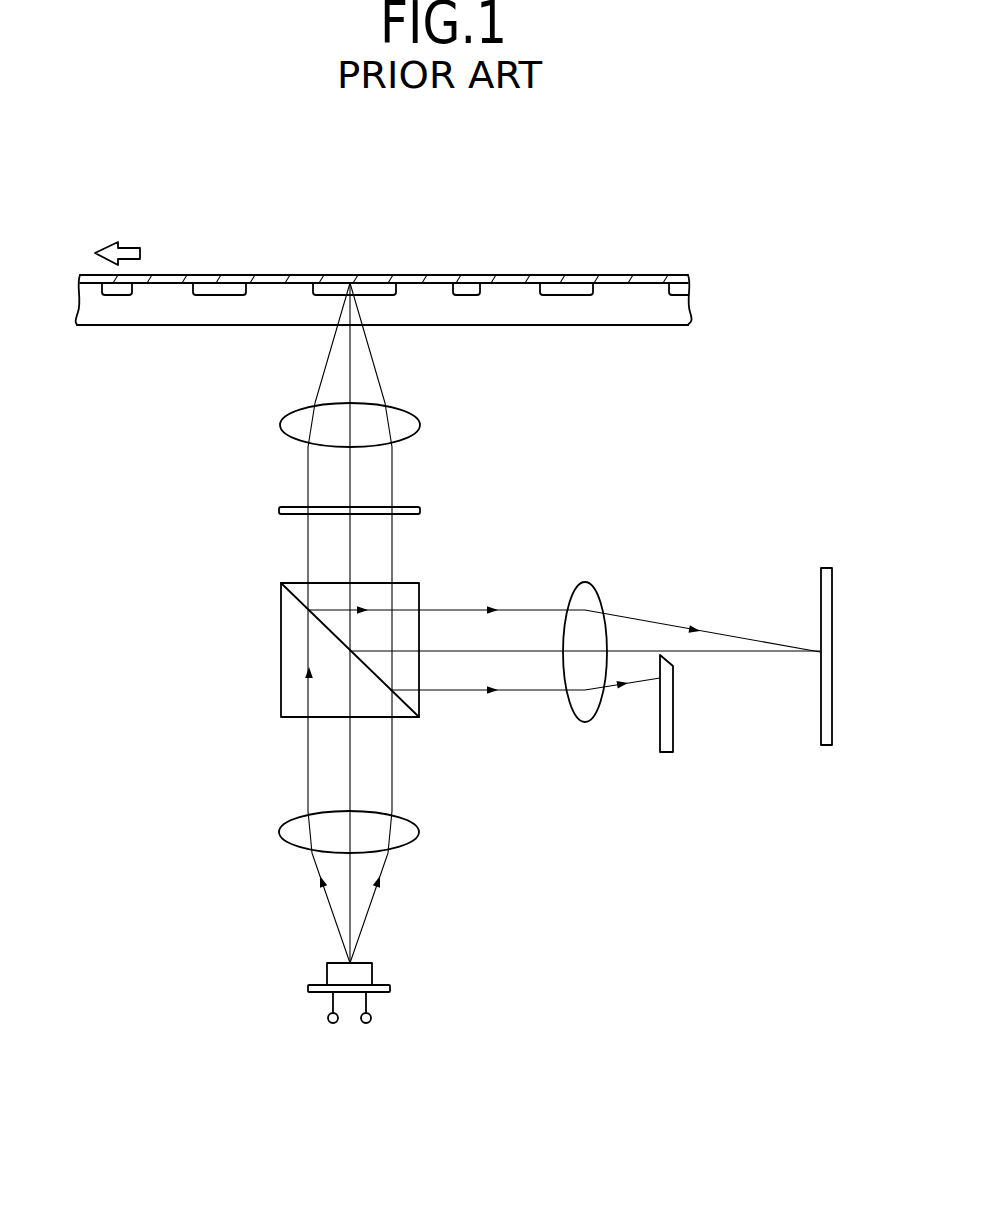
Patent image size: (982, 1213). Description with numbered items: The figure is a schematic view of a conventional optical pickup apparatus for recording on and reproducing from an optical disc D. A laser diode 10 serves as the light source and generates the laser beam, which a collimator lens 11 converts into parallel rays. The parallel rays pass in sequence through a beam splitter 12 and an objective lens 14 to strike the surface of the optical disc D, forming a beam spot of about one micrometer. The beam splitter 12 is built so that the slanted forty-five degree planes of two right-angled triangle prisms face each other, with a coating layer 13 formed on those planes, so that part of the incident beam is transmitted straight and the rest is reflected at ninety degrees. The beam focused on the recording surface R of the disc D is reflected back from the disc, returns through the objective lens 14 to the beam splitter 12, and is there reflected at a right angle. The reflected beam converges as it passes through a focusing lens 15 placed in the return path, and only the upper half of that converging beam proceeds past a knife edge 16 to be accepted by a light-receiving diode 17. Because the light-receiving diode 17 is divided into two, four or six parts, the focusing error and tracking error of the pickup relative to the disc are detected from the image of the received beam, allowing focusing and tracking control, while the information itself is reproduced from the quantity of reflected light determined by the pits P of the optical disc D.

The optical disc D is at (535, 272).
The recording surface R is at (613, 282).
The pits P is at (473, 296).
The laser diode 10 is at (372, 975).
The collimator lens 11 is at (405, 845).
The beam splitter 12 is at (281, 648).
The coating layer 13 is at (292, 507).
The objective lens 14 is at (413, 437).
The focusing lens 15 is at (577, 724).
The knife edge 16 is at (653, 752).
The light-receiving diode 17 is at (818, 745).